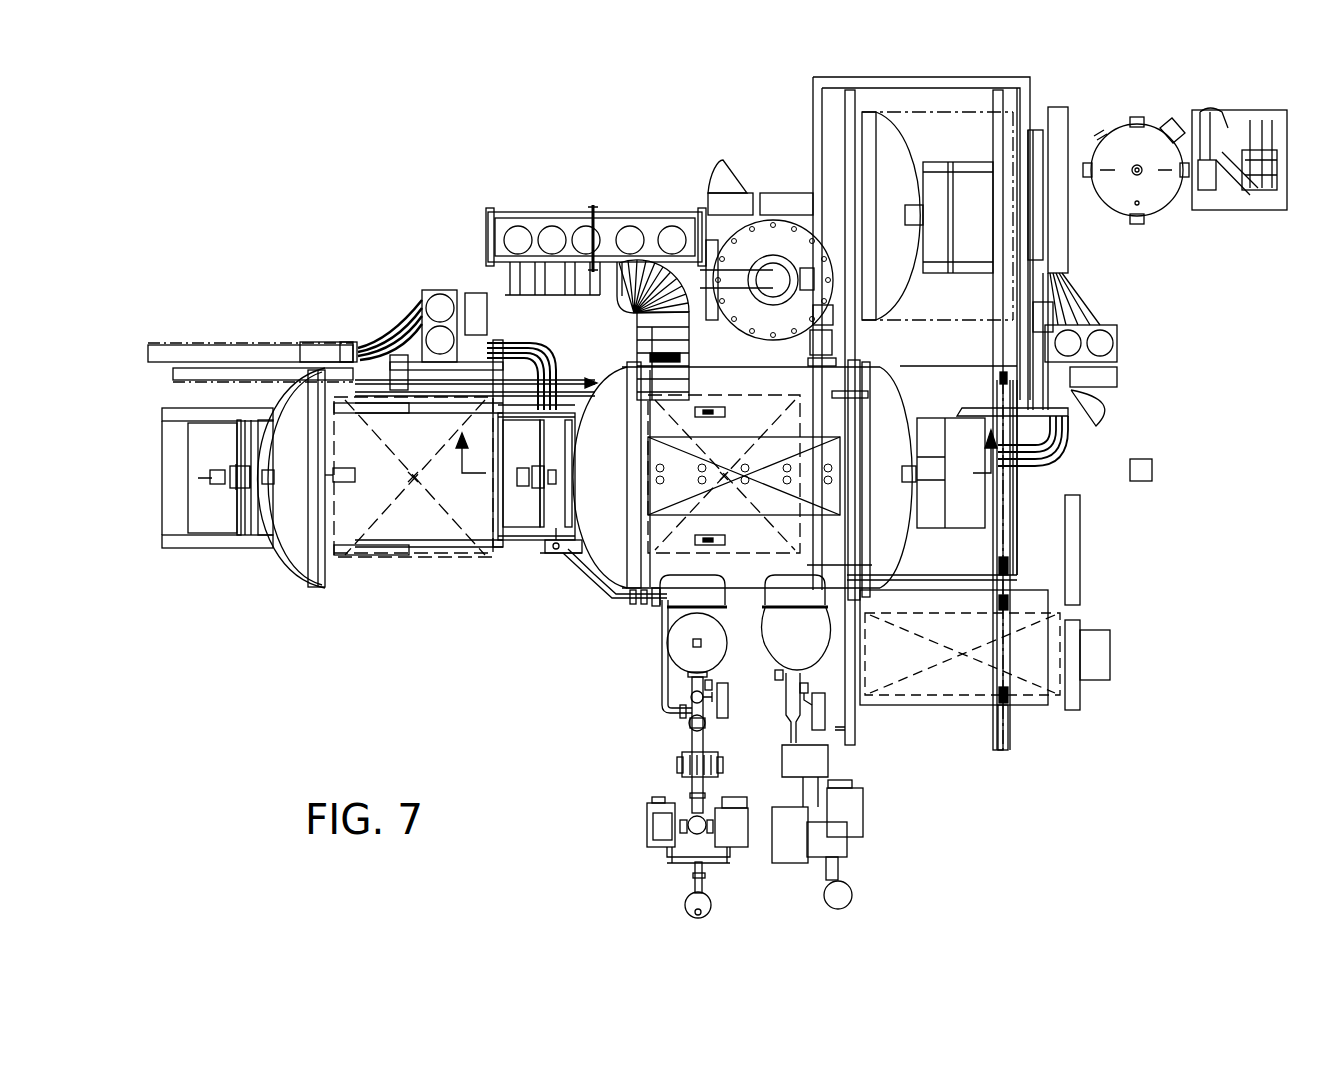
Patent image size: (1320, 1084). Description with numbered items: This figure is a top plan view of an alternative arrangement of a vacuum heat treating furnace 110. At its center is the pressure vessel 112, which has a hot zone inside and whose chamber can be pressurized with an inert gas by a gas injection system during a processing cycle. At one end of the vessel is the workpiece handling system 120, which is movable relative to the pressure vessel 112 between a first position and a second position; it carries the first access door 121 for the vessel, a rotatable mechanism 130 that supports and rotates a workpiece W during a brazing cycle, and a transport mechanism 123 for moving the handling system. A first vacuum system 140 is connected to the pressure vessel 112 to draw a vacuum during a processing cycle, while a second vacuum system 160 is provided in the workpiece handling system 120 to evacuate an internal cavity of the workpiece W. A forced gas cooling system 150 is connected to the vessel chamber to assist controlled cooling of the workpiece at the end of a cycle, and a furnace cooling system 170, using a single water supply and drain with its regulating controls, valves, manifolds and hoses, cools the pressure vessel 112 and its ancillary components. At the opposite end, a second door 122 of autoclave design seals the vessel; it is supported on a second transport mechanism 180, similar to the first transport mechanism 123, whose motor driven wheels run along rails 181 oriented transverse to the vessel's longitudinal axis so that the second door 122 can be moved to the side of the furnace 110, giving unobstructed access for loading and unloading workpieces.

The vacuum heat treating furnace 110 is at (527, 662).
The pressure vessel 112 is at (652, 607).
The workpiece handling system 120 is at (268, 570).
The first access door 121 is at (313, 585).
The second door 122 is at (895, 390).
The transport mechanism 123 is at (210, 450).
The rotatable mechanism 130 is at (560, 545).
The first vacuum system 140 is at (668, 726).
The forced gas cooling system 150 is at (698, 290).
The second vacuum system 160 is at (515, 478).
The furnace cooling system 170 is at (1158, 112).
The second transport mechanism 180 is at (963, 498).
The rails 181 is at (880, 590).
The workpiece W is at (417, 557).